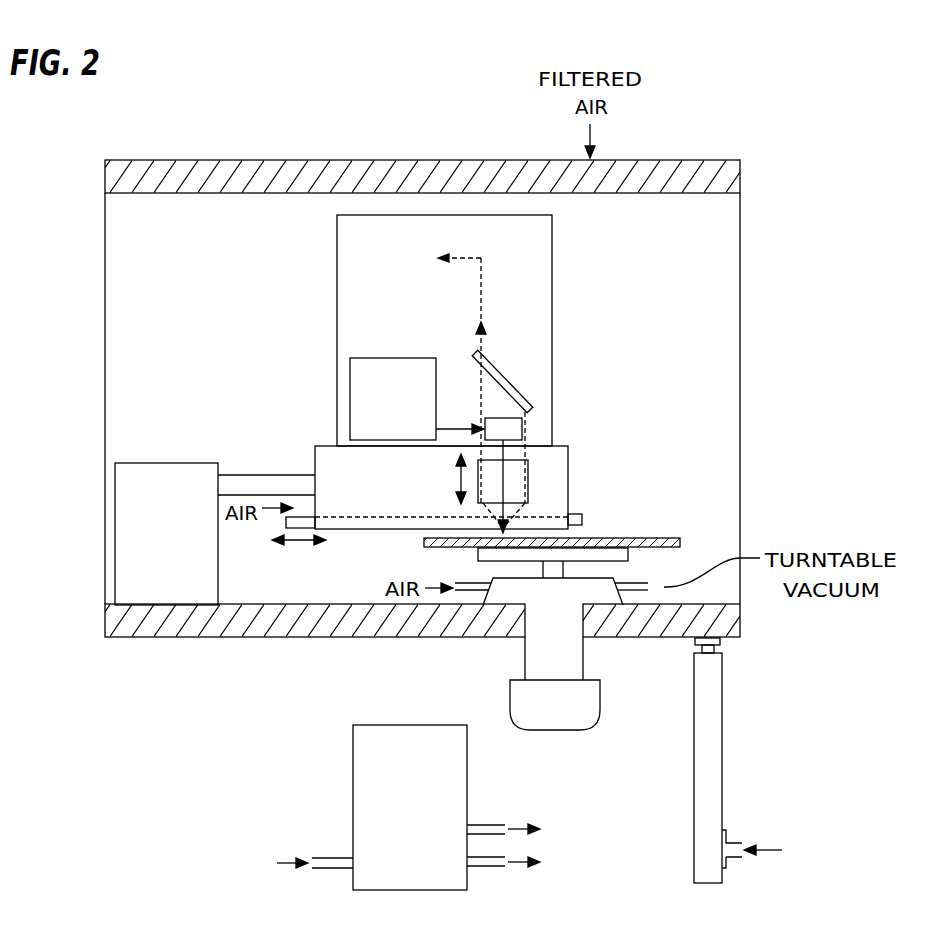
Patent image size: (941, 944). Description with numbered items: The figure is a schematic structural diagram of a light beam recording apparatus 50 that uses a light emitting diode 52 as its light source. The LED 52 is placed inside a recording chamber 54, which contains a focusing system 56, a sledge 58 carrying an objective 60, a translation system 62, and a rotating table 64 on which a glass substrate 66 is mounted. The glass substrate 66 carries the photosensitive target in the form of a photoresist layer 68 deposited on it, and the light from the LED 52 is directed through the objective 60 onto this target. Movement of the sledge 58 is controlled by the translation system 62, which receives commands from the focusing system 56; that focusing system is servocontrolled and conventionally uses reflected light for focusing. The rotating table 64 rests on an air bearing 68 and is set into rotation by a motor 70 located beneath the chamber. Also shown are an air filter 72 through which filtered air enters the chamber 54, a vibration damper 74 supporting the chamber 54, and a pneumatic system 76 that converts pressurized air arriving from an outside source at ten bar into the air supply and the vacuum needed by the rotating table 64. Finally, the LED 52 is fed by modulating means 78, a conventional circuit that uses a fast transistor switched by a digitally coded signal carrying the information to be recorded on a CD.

The light beam recording apparatus 50 is at (128, 143).
The light emitting diode 52 is at (524, 437).
The recording chamber 54 is at (422, 425).
The focusing system 56 is at (444, 359).
The sledge 58 is at (314, 458).
The objective 60 is at (505, 487).
The translation system 62 is at (215, 534).
The rotating table 64 is at (477, 560).
The glass substrate 66 is at (682, 541).
The photoresist layer / air bearing 68 is at (668, 533).
The motor 70 is at (555, 705).
The air filter 72 is at (654, 168).
The vibration damper 74 is at (712, 770).
The pneumatic system 76 is at (402, 807).
The modulating means 78 is at (385, 358).